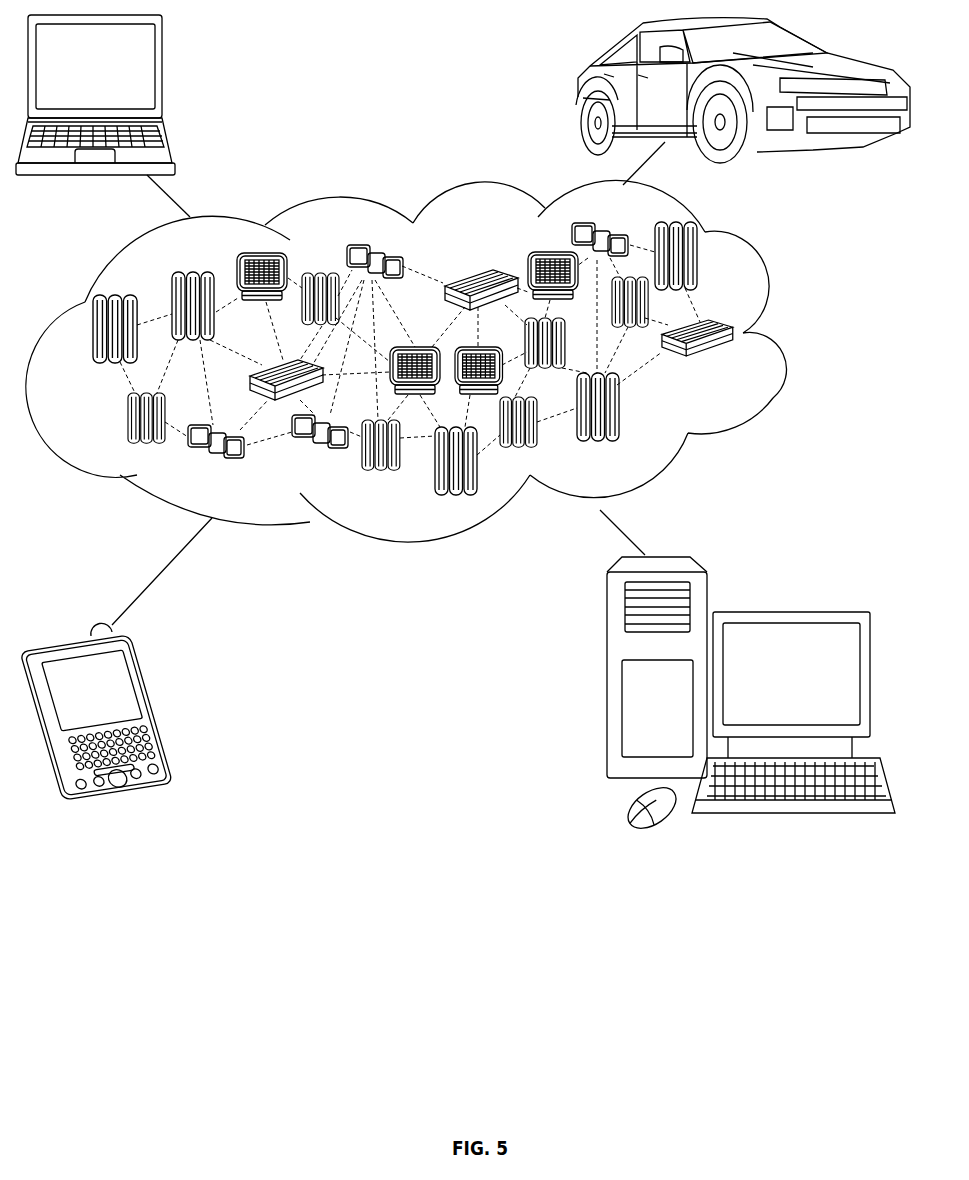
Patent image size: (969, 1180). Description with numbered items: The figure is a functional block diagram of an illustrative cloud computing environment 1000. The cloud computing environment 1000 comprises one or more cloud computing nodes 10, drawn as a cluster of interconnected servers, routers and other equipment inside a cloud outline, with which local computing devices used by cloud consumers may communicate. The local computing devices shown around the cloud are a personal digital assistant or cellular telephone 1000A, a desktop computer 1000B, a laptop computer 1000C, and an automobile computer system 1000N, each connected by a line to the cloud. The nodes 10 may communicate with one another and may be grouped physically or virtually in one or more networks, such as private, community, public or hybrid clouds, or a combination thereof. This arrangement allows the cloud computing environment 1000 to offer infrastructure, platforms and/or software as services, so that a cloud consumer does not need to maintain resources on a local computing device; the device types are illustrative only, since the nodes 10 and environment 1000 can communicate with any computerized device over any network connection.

The personal digital assistant (PDA) or cellular telephone 1000A is at (150, 705).
The desktop computer 1000B is at (800, 593).
The laptop computer 1000C is at (162, 76).
The automobile computer system 1000N is at (580, 93).
The cloud computing environment 1000 is at (787, 334).
The cloud computing nodes 10 is at (735, 366).